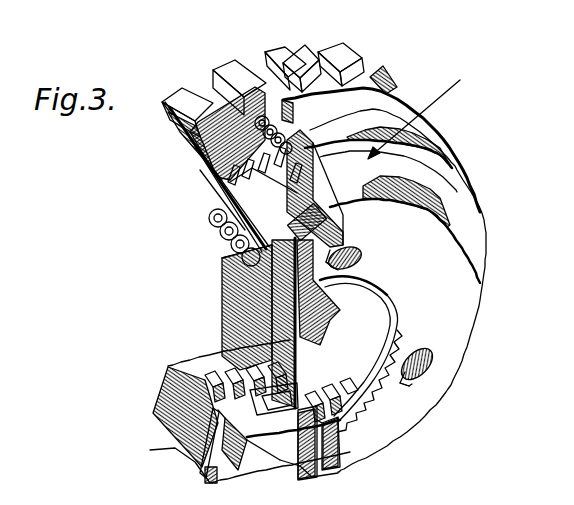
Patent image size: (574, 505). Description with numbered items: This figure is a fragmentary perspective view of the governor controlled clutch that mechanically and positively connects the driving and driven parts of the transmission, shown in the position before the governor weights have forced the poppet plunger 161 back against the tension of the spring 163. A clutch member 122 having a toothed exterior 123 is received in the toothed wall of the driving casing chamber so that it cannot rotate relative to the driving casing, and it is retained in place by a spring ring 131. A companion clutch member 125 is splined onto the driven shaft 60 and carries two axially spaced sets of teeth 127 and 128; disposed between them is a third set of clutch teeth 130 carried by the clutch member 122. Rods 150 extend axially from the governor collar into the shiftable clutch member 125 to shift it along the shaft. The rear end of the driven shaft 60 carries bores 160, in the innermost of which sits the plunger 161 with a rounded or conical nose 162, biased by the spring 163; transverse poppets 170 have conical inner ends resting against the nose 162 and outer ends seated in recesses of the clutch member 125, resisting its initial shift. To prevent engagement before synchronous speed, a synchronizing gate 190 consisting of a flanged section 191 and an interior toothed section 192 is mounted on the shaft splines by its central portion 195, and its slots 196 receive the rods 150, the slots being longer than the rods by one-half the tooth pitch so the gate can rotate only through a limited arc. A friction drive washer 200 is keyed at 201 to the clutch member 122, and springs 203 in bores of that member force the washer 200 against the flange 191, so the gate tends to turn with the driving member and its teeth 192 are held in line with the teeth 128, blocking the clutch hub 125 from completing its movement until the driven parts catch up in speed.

The driven shaft 60 is at (330, 303).
The clutch member 122 is at (167, 393).
The toothed exterior 123 is at (289, 45).
The companion clutch member 125 is at (233, 350).
The set of teeth 127 is at (185, 152).
The set of teeth 128 is at (222, 205).
The third set of clutch teeth 130 is at (197, 168).
The spring ring 131 is at (203, 485).
The rods 150 is at (360, 263).
The bores 160 is at (299, 338).
The plunger 161 is at (230, 257).
The nose 162 is at (233, 300).
The spring 163 is at (218, 230).
The poppets 170 is at (233, 278).
The synchronizing gate 190 is at (392, 271).
The flanged section 191 is at (333, 142).
The interior toothed section 192 is at (345, 443).
The central portion 195 is at (397, 320).
The slots 196 is at (437, 238).
The friction drive washer 200 is at (310, 130).
The keyed connection 201 is at (207, 417).
The springs 203 is at (247, 90).